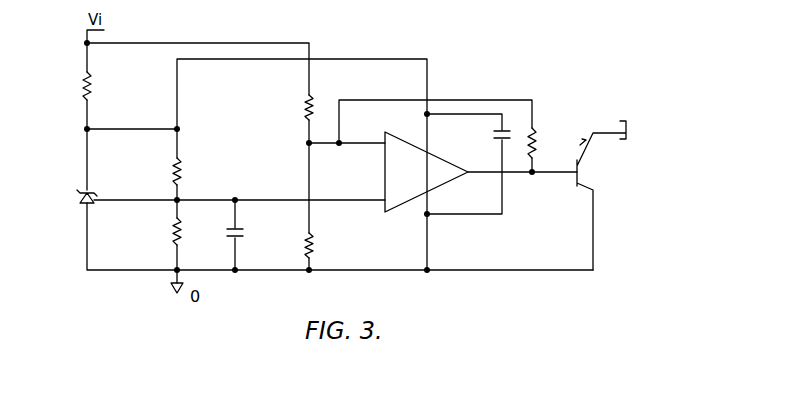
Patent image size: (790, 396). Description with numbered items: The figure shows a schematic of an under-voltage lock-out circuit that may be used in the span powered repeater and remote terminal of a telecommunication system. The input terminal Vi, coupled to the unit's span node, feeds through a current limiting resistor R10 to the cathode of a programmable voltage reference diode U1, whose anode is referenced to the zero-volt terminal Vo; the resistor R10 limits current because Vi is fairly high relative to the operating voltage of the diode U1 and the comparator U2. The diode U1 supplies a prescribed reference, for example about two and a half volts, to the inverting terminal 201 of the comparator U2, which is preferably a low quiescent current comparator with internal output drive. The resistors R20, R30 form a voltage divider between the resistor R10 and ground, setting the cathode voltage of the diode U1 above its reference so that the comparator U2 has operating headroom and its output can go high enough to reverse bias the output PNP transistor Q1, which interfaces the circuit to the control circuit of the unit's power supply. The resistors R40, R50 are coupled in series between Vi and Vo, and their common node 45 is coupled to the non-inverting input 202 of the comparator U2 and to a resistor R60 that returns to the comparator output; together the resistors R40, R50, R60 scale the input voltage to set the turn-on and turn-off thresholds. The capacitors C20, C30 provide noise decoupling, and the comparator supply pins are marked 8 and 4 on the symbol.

The current limiting resistor R10 is at (97, 94).
The resistor R20 is at (168, 173).
The resistor R30 is at (170, 232).
The resistor R40 is at (301, 101).
The resistor R50 is at (300, 240).
The resistor R60 is at (538, 151).
The capacitor C20 is at (224, 237).
The capacitor C30 is at (490, 143).
The programmable voltage reference diode U1 is at (78, 201).
The voltage comparator U2 is at (418, 140).
The output transistor Q1 is at (592, 180).
The common node 45 is at (306, 142).
The inverting terminal 201 is at (383, 203).
The non-inverting input 202 is at (379, 146).
The pin 8 is at (437, 131).
The pin 4 is at (420, 217).